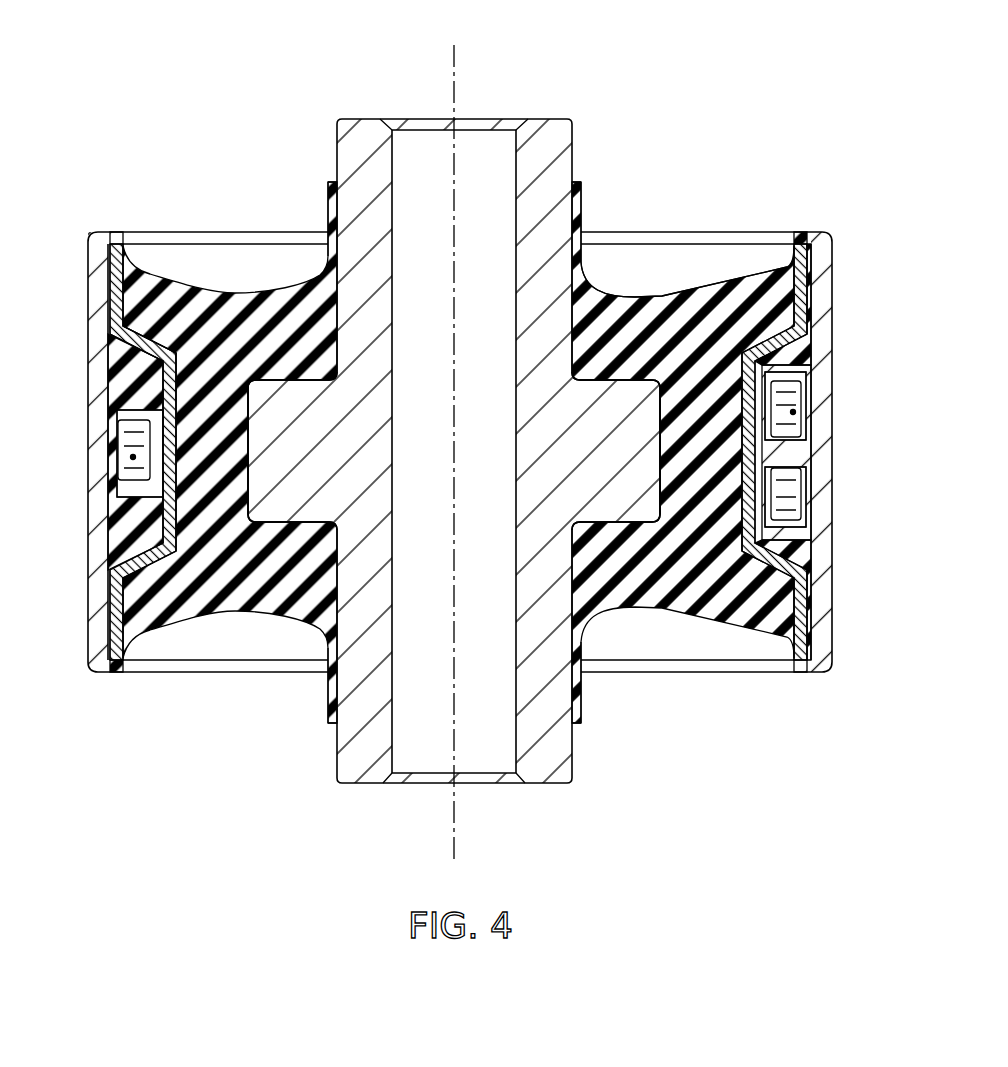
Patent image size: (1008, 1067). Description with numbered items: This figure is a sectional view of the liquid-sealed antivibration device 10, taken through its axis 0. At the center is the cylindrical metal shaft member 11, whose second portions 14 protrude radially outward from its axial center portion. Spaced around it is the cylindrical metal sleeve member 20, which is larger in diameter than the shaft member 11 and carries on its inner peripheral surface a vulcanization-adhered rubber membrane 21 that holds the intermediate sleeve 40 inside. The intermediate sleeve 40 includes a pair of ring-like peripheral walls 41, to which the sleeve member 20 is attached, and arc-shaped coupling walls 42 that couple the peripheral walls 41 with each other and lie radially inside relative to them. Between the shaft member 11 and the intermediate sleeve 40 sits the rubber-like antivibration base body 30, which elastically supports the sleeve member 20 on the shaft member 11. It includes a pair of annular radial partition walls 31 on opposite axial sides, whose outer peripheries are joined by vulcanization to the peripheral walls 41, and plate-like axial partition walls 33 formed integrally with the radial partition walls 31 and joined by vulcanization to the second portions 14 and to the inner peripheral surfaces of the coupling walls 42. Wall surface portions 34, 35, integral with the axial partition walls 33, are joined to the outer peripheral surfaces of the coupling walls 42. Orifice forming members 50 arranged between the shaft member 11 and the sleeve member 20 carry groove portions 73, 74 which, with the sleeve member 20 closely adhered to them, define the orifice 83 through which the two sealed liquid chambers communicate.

The axis 0 is at (456, 90).
The liquid-sealed antivibration device 10 is at (781, 129).
The shaft member 11 is at (557, 141).
The second portions 14 is at (648, 448).
The sleeve member 20 is at (832, 260).
The rubber membrane 21 is at (808, 488).
The antivibration base body 30 is at (677, 282).
The radial partition walls 31 is at (630, 302).
The axial partition walls 33 is at (670, 483).
The wall surface portion 34 is at (793, 557).
The wall surface portion 35 is at (128, 527).
The intermediate sleeve 40 is at (784, 676).
The peripheral walls 41 is at (803, 280).
The coupling walls 42 is at (742, 414).
The orifice forming members 50 is at (187, 338).
The groove portions 73 is at (805, 515).
The groove portions 74 is at (806, 388).
The orifice 83 is at (795, 412).